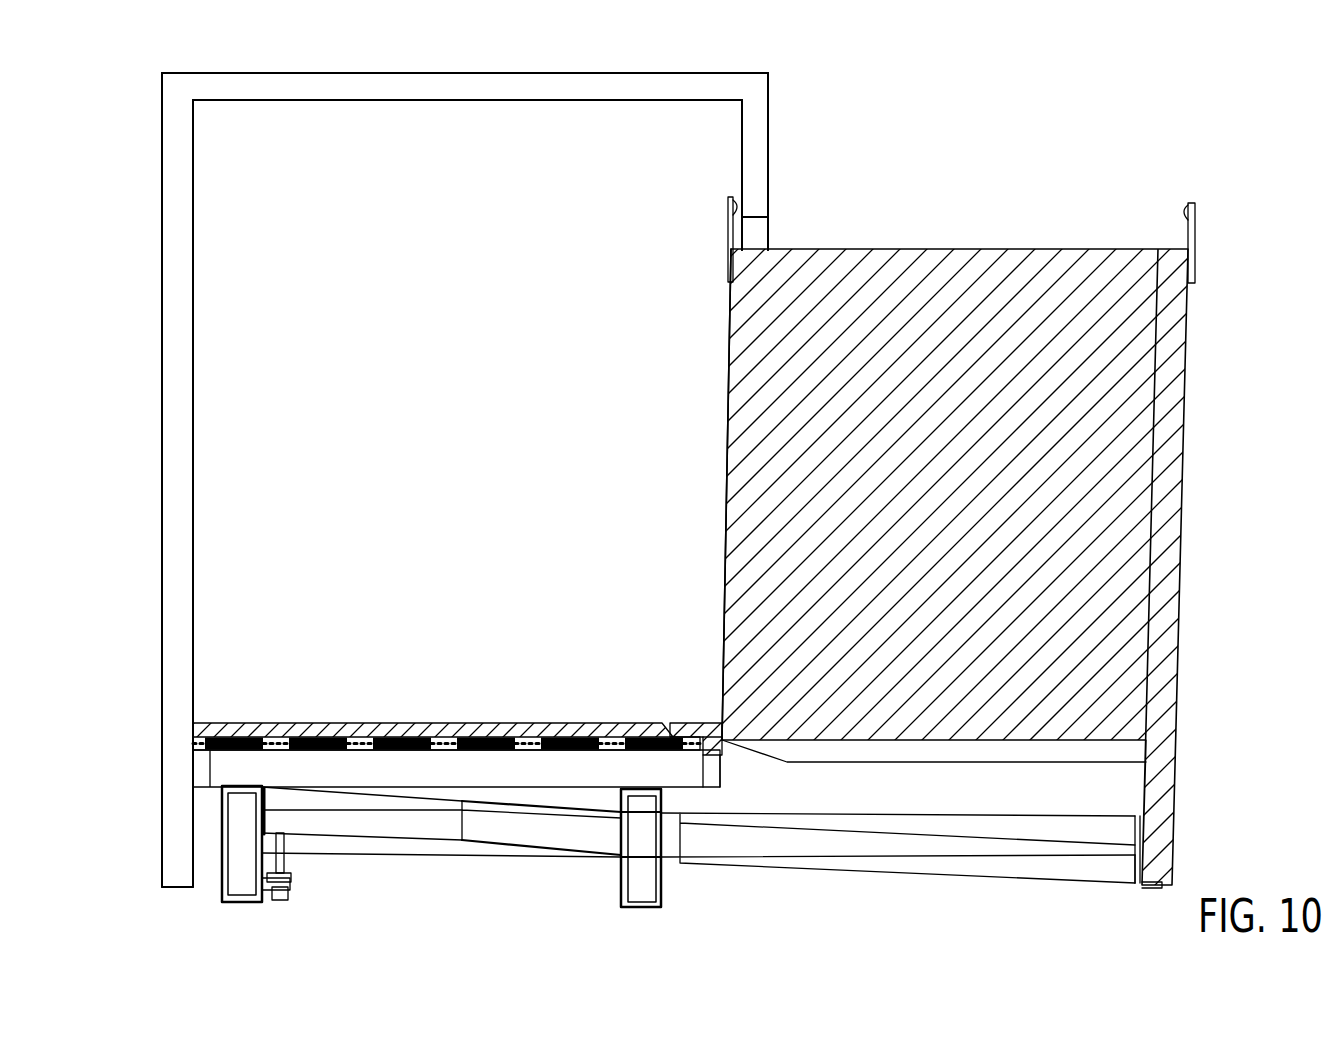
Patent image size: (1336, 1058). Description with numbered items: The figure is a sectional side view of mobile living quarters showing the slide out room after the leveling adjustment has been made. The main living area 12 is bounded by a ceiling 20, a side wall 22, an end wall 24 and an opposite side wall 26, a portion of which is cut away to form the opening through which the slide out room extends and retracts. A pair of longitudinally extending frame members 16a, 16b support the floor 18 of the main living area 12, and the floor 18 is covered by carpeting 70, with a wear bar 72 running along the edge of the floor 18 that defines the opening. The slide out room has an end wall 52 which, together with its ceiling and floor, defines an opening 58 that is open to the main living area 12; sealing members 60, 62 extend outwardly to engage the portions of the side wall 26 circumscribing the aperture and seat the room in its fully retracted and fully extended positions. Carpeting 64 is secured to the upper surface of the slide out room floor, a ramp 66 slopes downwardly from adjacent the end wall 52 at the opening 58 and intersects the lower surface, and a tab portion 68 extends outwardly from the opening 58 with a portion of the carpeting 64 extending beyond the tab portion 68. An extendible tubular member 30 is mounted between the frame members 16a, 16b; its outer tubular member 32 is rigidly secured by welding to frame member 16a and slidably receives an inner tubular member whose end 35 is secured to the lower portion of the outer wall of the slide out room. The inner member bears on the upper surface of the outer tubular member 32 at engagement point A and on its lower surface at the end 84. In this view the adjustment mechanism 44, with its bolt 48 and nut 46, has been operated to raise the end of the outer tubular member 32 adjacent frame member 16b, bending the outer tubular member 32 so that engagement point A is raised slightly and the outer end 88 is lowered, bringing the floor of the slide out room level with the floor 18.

The main living area 12 is at (748, 138).
The ceiling 20 is at (583, 86).
The side wall 22 is at (194, 345).
The end wall 24 is at (472, 180).
The side wall 26 is at (760, 197).
The sealing member 60 is at (727, 255).
The sealing member 62 is at (1196, 240).
The end wall 52 is at (955, 325).
The opening 58 is at (722, 512).
The ramp 66 is at (785, 760).
The outer end 88 is at (1148, 822).
The carpeting 70 is at (445, 722).
The carpeting 64 is at (690, 722).
The tab portion 68 is at (718, 732).
The floor 18 is at (485, 782).
The wear bar 72 is at (613, 755).
The frame member 16a is at (621, 903).
The frame member 16b is at (222, 896).
The extendible tubular member 30 is at (548, 872).
The outer tubular member 32 is at (415, 848).
The engagement point A is at (468, 803).
The adjustment mechanism 44 is at (368, 882).
The bolt 48 is at (267, 833).
The nut 46 is at (290, 881).
The end 84 is at (680, 850).
The end 35 is at (1130, 863).